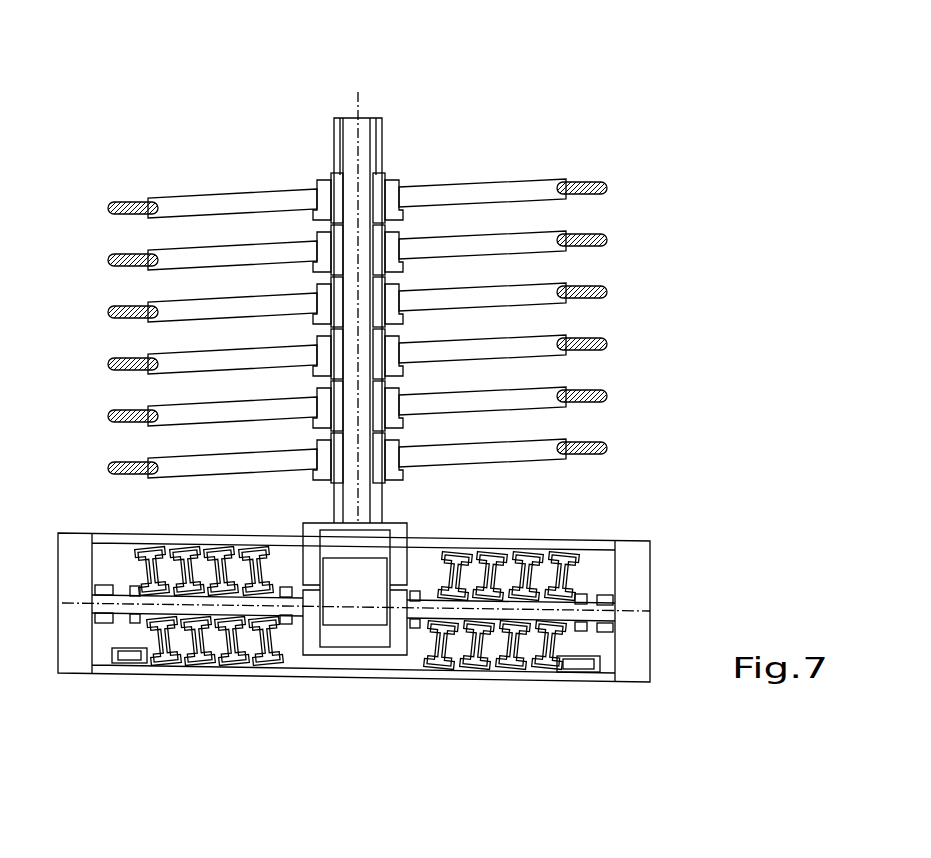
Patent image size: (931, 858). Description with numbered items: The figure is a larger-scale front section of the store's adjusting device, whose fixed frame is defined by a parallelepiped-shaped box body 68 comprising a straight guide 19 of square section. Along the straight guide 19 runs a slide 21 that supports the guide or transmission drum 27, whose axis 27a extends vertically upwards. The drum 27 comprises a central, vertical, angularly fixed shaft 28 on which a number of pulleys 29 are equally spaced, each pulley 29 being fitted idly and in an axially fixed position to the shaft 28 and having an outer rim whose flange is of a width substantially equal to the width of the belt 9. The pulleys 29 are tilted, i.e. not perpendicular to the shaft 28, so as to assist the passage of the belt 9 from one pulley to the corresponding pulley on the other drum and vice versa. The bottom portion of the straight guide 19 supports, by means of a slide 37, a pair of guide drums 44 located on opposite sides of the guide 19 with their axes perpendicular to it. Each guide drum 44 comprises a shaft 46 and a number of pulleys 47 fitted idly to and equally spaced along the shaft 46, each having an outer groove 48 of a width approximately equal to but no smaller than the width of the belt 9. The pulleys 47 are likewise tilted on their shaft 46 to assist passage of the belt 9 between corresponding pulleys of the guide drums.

The belt 9 is at (605, 190).
The straight guide 19 is at (368, 625).
The slide 21 is at (405, 537).
The guide or transmission drum 27 is at (178, 186).
The axis 27a is at (355, 108).
The shaft 28 is at (375, 120).
The pulley 29 is at (239, 184).
The slide 37 is at (312, 650).
The guide drum 44 is at (150, 682).
The shaft 46 is at (98, 597).
The pulley 47 is at (212, 662).
The outer groove 48 is at (240, 654).
The box body 68 is at (607, 683).